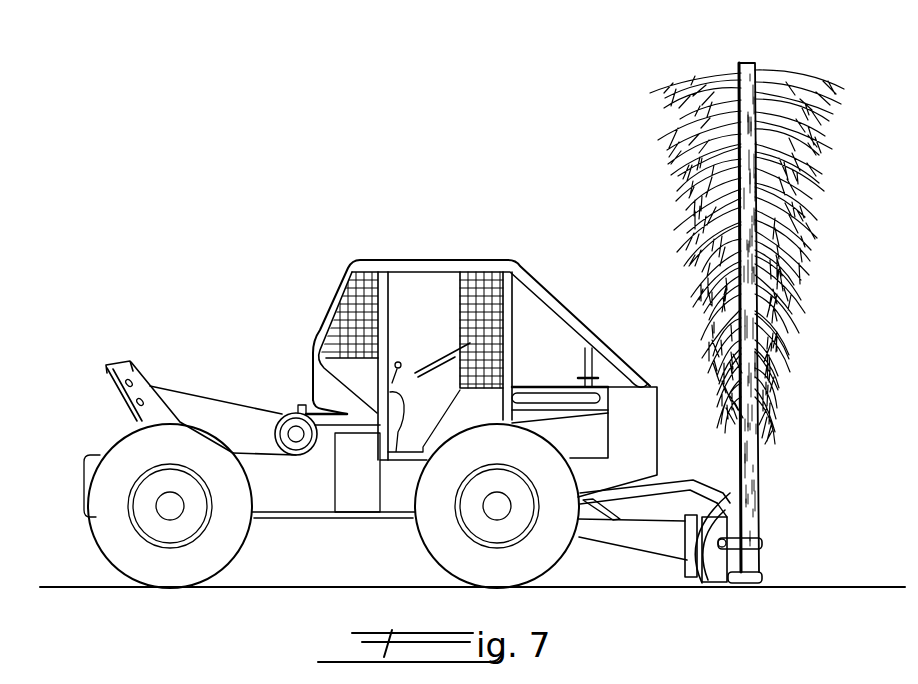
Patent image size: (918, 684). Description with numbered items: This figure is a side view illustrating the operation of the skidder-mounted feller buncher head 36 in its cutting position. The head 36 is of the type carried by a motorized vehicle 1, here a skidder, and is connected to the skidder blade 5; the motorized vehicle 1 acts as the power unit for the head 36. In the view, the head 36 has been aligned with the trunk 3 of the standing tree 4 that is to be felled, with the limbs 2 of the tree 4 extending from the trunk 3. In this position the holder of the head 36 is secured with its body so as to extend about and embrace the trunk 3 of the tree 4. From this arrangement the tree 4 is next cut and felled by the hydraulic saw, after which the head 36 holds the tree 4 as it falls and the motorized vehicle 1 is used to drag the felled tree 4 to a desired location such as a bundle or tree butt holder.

The motorized vehicle 1 is at (338, 538).
The limbs 2 is at (747, 317).
The trunk 3 is at (757, 468).
The tree 4 is at (778, 438).
The skidder blade 5 is at (688, 556).
The feller buncher head 36 is at (737, 602).